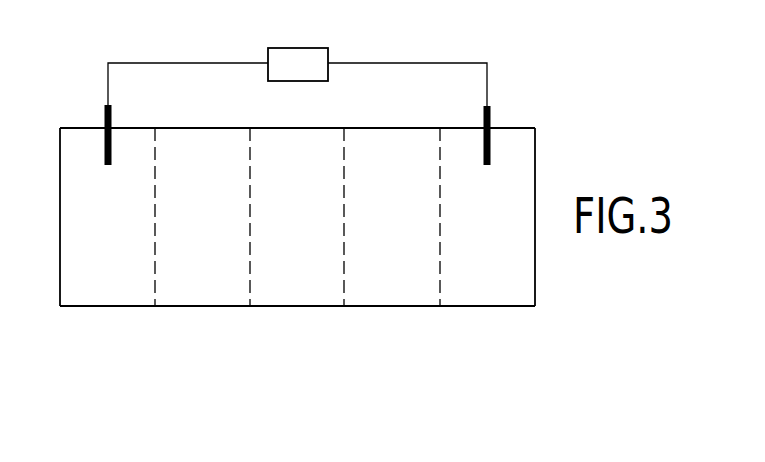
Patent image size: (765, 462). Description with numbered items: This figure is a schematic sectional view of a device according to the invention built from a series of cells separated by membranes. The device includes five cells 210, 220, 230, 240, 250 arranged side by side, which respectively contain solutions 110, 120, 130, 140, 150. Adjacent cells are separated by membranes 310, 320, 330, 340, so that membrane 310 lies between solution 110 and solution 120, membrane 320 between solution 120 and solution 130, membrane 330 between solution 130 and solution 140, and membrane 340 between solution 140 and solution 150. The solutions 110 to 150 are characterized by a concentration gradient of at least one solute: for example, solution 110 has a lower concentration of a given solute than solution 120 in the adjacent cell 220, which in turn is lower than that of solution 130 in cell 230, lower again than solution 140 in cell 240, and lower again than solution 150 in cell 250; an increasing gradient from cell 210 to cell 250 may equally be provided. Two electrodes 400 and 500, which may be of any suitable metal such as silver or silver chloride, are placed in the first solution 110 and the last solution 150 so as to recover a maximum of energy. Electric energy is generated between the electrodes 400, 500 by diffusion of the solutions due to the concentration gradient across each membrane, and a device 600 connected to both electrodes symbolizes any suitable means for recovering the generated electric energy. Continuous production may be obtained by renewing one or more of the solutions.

The solution 110 is at (125, 233).
The solution 120 is at (220, 233).
The solution 130 is at (317, 233).
The solution 140 is at (410, 233).
The solution 150 is at (507, 233).
The cell 210 is at (107, 307).
The cell 220 is at (202, 307).
The cell 230 is at (297, 307).
The cell 240 is at (392, 307).
The cell 250 is at (487, 307).
The membrane 310 is at (157, 153).
The membrane 320 is at (252, 153).
The membrane 330 is at (346, 153).
The membrane 340 is at (442, 153).
The electrode 400 is at (104, 120).
The electrode 500 is at (491, 120).
The energy recovery device 600 is at (298, 48).